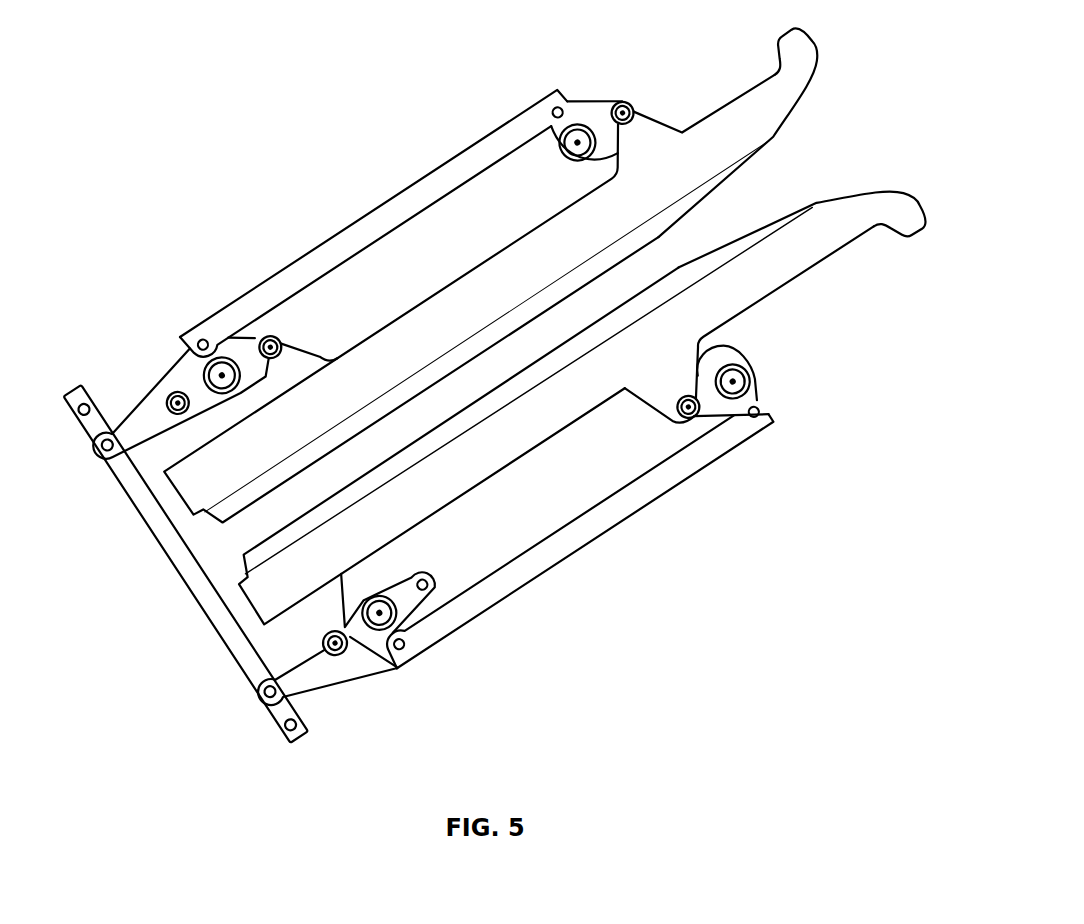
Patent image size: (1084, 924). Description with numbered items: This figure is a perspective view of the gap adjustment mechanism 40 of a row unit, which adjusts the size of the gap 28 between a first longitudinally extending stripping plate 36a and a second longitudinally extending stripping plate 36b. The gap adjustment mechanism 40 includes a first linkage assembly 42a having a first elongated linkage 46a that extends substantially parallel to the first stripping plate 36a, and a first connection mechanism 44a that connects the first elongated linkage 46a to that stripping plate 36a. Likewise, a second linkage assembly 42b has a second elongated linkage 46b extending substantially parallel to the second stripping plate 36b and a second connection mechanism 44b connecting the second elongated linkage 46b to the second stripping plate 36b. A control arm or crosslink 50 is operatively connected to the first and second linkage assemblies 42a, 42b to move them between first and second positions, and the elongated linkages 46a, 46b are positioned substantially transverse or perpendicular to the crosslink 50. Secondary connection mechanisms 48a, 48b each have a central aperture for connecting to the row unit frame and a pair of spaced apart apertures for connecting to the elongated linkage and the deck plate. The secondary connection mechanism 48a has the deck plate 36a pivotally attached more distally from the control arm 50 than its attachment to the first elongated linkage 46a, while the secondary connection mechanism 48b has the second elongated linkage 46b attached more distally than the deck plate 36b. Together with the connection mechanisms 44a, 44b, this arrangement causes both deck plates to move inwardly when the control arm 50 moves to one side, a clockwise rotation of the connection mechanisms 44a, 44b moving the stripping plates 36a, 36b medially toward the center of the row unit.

The gap adjustment mechanism 40 is at (366, 80).
The gap 28 is at (833, 135).
The first longitudinally extending stripping plate 36a is at (802, 73).
The second longitudinally extending stripping plate 36b is at (830, 220).
The first linkage assembly 42a is at (366, 180).
The second linkage assembly 42b is at (652, 530).
The first connection mechanism 44a is at (183, 373).
The second connection mechanism 44b is at (362, 660).
The first elongated linkage 46a is at (323, 245).
The second elongated linkage 46b is at (527, 575).
The secondary connection mechanism 48a is at (589, 112).
The secondary connection mechanism 48b is at (755, 393).
The control arm or crosslink 50 is at (165, 543).